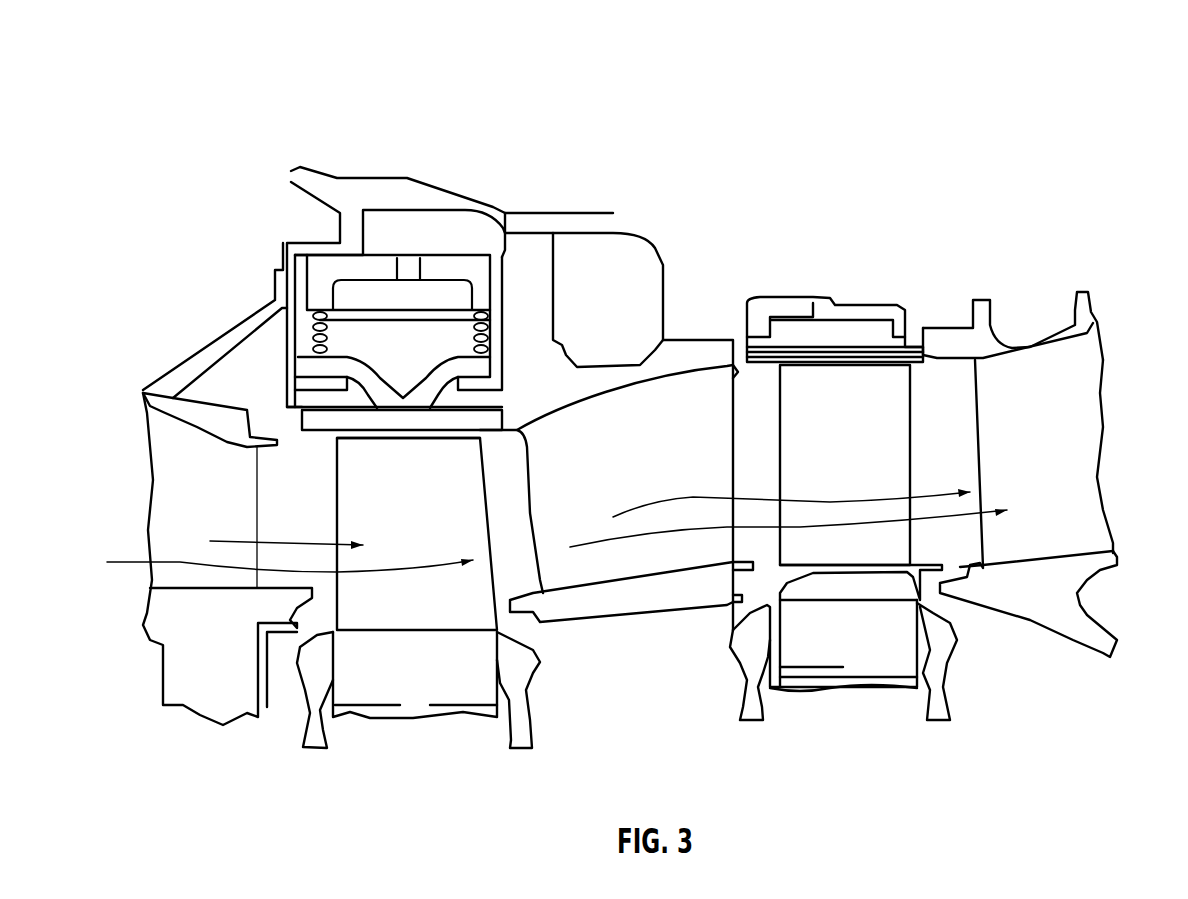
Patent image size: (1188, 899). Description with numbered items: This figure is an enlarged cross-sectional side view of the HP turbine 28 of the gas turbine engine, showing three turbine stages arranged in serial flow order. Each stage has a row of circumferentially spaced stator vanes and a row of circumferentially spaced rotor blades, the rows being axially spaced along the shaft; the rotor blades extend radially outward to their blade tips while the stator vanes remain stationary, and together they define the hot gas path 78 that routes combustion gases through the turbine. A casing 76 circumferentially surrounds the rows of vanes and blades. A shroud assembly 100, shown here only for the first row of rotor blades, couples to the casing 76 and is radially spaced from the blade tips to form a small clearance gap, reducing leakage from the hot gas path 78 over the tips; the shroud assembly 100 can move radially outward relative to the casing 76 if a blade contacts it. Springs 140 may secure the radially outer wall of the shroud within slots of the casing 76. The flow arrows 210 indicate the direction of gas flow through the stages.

The HP turbine 28 is at (635, 98).
The casing 76 is at (297, 373).
The hot gas path 78 is at (133, 563).
The shroud assembly 100 is at (397, 363).
The spring 140 is at (485, 345).
The cooling air flow 210 is at (227, 545).